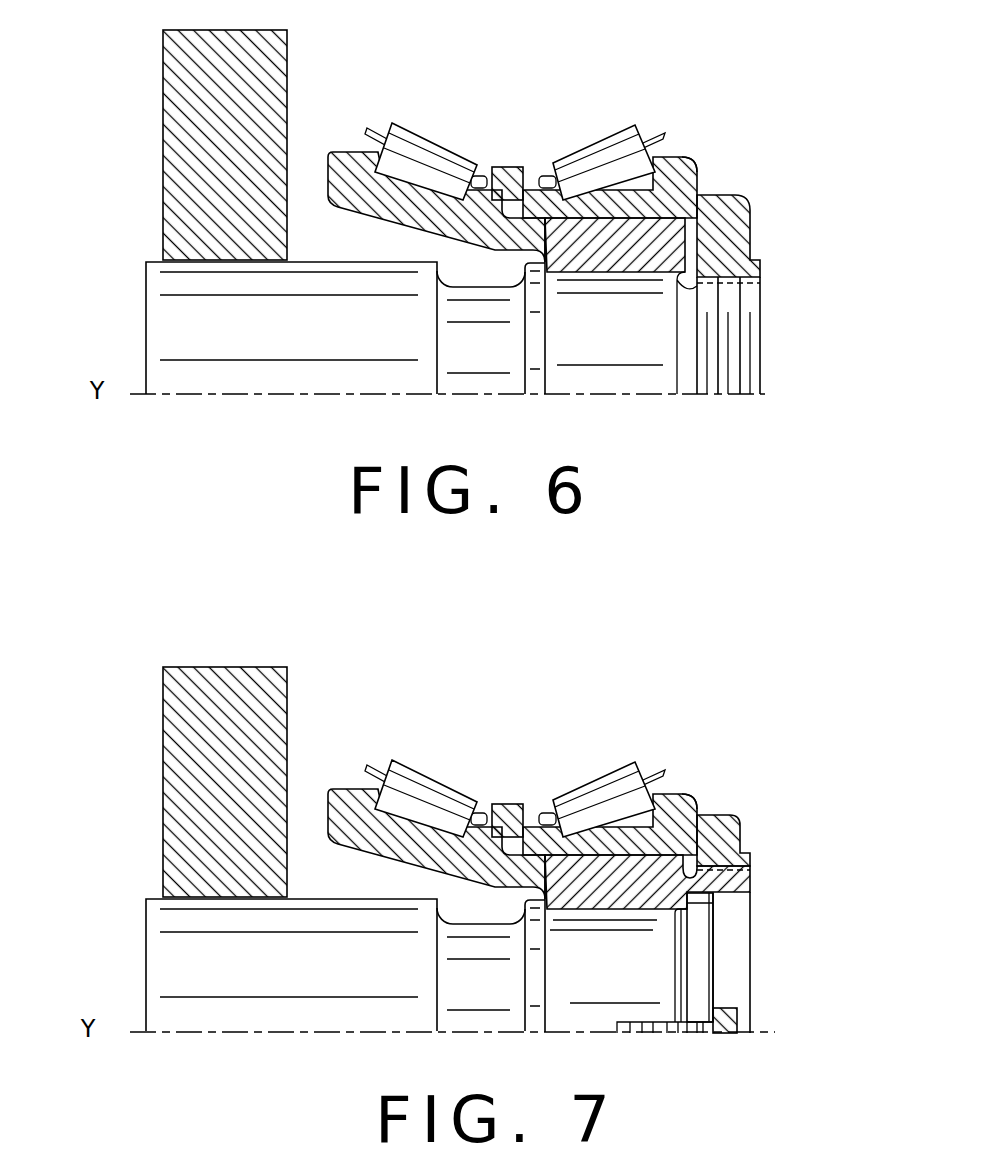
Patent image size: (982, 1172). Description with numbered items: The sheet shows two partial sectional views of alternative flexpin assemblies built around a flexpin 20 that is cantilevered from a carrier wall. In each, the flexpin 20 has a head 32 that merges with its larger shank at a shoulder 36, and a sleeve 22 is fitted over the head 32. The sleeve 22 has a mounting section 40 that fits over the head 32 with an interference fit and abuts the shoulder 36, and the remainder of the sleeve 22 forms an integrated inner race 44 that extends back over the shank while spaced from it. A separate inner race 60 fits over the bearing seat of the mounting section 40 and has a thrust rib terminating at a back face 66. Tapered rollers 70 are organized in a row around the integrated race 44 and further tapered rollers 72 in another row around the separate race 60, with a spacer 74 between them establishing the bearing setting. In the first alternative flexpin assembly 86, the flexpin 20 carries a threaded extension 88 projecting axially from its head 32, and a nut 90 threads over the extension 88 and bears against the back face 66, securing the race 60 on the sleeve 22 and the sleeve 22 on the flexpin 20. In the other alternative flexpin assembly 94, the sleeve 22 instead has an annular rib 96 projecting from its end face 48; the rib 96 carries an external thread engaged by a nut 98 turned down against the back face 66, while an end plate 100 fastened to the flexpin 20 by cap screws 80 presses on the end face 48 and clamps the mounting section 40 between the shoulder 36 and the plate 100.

In FIG. 6, the flexpin 20 is at (147, 335).
In FIG. 7, the flexpin 20 is at (147, 957).
In FIG. 6, the sleeve 22 is at (347, 150).
In FIG. 7, the sleeve 22 is at (342, 790).
In FIG. 6, the head 32 is at (630, 380).
In FIG. 7, the head 32 is at (603, 995).
In FIG. 6, the shoulder 36 is at (547, 338).
In FIG. 7, the shoulder 36 is at (543, 975).
In FIG. 6, the mounting section 40 is at (657, 235).
In FIG. 7, the mounting section 40 is at (668, 855).
In FIG. 6, the integrated inner race 44 is at (398, 200).
In FIG. 7, the integrated inner race 44 is at (395, 843).
In FIG. 7, the end face 48 is at (690, 902).
In FIG. 6, the separate inner race 60 is at (672, 175).
In FIG. 7, the separate inner race 60 is at (657, 878).
In FIG. 6, the back face 66 is at (700, 167).
In FIG. 7, the back face 66 is at (698, 813).
In FIG. 6, the tapered rollers 70 is at (412, 158).
In FIG. 7, the tapered rollers 70 is at (400, 790).
In FIG. 6, the tapered rollers 72 is at (620, 145).
In FIG. 7, the tapered rollers 72 is at (610, 797).
In FIG. 6, the spacer 74 is at (510, 170).
In FIG. 7, the spacer 74 is at (507, 808).
In FIG. 7, the cap screws 80 is at (735, 1018).
In FIG. 6, the alternative flexpin assembly 86 is at (547, 121).
In FIG. 6, the threaded extension 88 is at (747, 340).
In FIG. 6, the nut 90 is at (733, 242).
In FIG. 7, the alternative flexpin assembly 94 is at (545, 739).
In FIG. 7, the annular rib 96 is at (750, 880).
In FIG. 7, the nut 98 is at (725, 835).
In FIG. 7, the end plate 100 is at (697, 955).